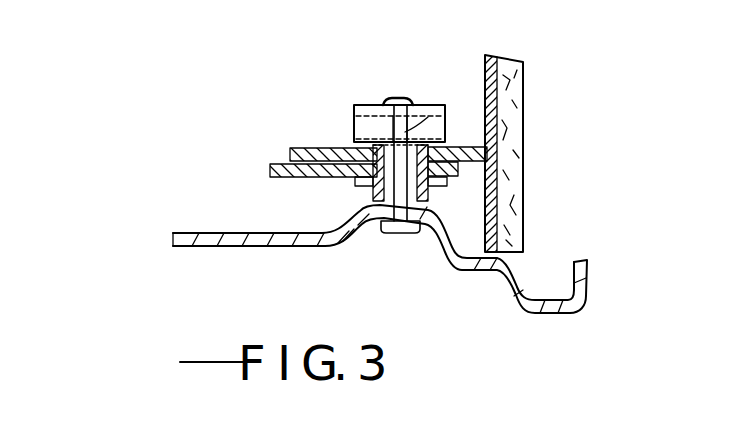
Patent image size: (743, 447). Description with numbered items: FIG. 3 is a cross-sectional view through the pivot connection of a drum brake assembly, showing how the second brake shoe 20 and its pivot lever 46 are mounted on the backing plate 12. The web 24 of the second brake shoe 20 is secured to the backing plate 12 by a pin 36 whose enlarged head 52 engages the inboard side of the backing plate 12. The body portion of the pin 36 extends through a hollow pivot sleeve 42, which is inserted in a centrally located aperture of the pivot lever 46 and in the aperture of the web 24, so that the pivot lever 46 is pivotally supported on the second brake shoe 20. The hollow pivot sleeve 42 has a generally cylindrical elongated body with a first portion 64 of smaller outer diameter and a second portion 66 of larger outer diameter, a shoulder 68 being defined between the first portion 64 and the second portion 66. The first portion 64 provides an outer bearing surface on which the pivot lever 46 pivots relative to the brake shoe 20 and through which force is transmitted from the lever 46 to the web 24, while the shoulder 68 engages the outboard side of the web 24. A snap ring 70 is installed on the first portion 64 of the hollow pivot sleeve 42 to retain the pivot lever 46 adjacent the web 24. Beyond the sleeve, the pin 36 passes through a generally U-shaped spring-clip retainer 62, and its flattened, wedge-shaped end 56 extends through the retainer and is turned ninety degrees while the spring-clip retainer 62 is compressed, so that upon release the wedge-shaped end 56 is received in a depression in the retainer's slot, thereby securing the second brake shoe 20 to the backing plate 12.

The backing plate 12 is at (207, 233).
The second brake shoe 20 is at (525, 122).
The web 24 is at (290, 154).
The pin 36 is at (430, 104).
The hollow pivot sleeve 42 is at (360, 219).
The pivot lever 46 is at (270, 173).
The enlarged head 52 is at (400, 236).
The flattened, wedge-shaped end 56 is at (398, 98).
The U-shaped spring-clip retainer 62 is at (350, 106).
The first portion 64 is at (376, 206).
The second portion 66 is at (357, 148).
The shoulder 68 is at (468, 147).
The snap ring 70 is at (440, 186).